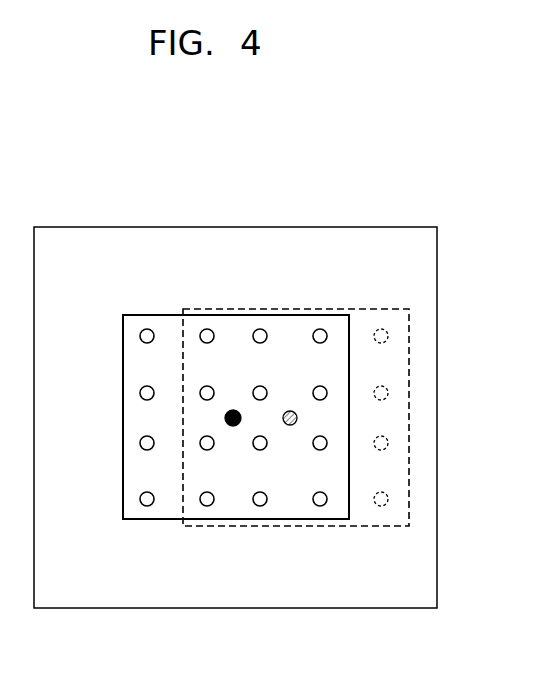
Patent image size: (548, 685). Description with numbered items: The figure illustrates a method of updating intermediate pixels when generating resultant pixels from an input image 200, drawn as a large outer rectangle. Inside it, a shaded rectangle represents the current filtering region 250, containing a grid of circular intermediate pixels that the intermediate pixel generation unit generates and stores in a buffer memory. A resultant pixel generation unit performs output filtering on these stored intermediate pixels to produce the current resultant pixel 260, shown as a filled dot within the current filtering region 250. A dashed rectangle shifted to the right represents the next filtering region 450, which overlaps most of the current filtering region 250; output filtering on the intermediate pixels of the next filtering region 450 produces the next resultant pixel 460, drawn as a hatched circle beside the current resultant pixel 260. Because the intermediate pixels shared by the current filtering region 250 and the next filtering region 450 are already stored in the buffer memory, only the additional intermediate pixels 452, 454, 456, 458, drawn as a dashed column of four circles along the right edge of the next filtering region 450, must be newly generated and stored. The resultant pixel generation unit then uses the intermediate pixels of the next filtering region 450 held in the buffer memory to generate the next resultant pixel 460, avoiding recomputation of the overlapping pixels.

The input image 200 is at (95, 227).
The current filtering region 250 is at (165, 330).
The current resultant pixel 260 is at (233, 426).
The next filtering region 450 is at (365, 332).
The additional intermediate pixel 452 is at (388, 336).
The additional intermediate pixel 454 is at (388, 393).
The additional intermediate pixel 456 is at (388, 443).
The additional intermediate pixel 458 is at (388, 499).
The next resultant pixel 460 is at (290, 425).